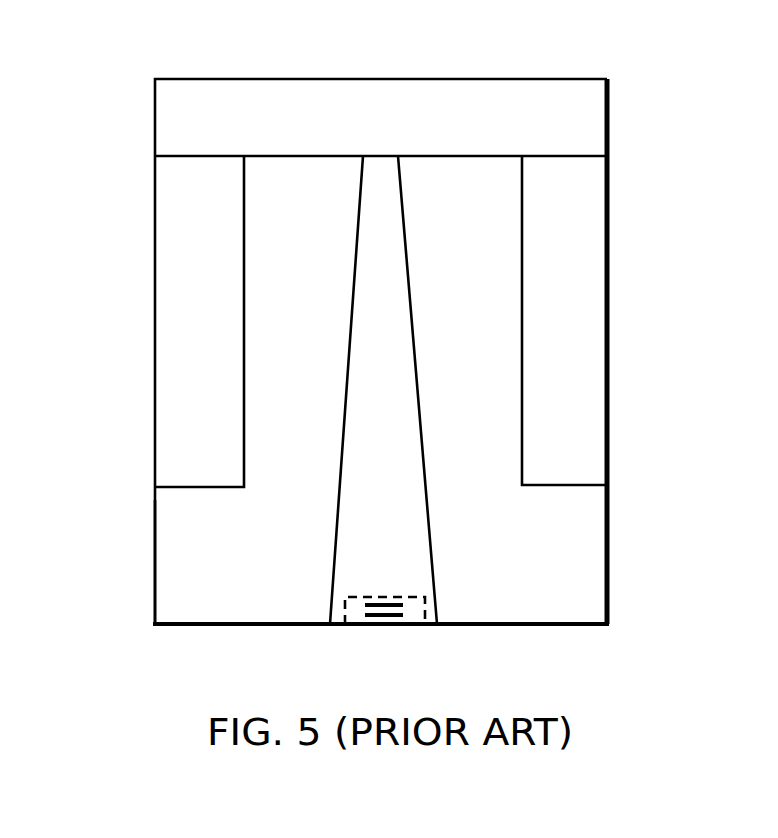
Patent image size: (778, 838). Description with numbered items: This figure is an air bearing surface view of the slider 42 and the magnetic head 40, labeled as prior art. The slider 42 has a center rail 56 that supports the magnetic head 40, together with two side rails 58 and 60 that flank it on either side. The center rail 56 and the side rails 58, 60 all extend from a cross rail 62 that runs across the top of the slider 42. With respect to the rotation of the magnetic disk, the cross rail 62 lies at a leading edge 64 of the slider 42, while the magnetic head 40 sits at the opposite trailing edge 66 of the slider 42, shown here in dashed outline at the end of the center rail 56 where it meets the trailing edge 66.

The magnetic head 40 is at (355, 630).
The slider 42 is at (130, 572).
The center rail 56 is at (368, 266).
The side rail 58 is at (170, 228).
The side rail 60 is at (580, 226).
The cross rail 62 is at (291, 88).
The leading edge 64 is at (450, 78).
The trailing edge 66 is at (505, 628).